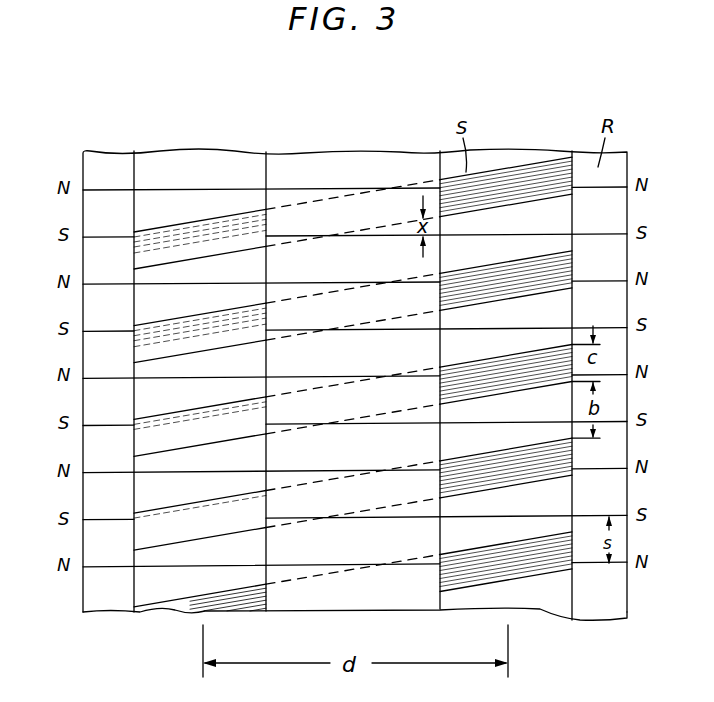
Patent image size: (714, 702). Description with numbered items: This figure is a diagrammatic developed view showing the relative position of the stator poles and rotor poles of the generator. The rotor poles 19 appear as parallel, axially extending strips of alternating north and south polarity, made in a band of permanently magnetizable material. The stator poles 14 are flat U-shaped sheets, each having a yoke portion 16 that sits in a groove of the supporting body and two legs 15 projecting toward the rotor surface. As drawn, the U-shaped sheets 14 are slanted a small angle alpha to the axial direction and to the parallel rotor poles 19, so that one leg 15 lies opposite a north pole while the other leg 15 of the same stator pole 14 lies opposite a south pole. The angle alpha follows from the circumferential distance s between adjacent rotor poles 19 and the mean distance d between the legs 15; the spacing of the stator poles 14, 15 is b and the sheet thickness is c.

The stator pole 14 is at (543, 163).
The leg 15 is at (180, 232).
The yoke portion 16 is at (323, 213).
The rotor pole 19 is at (100, 189).